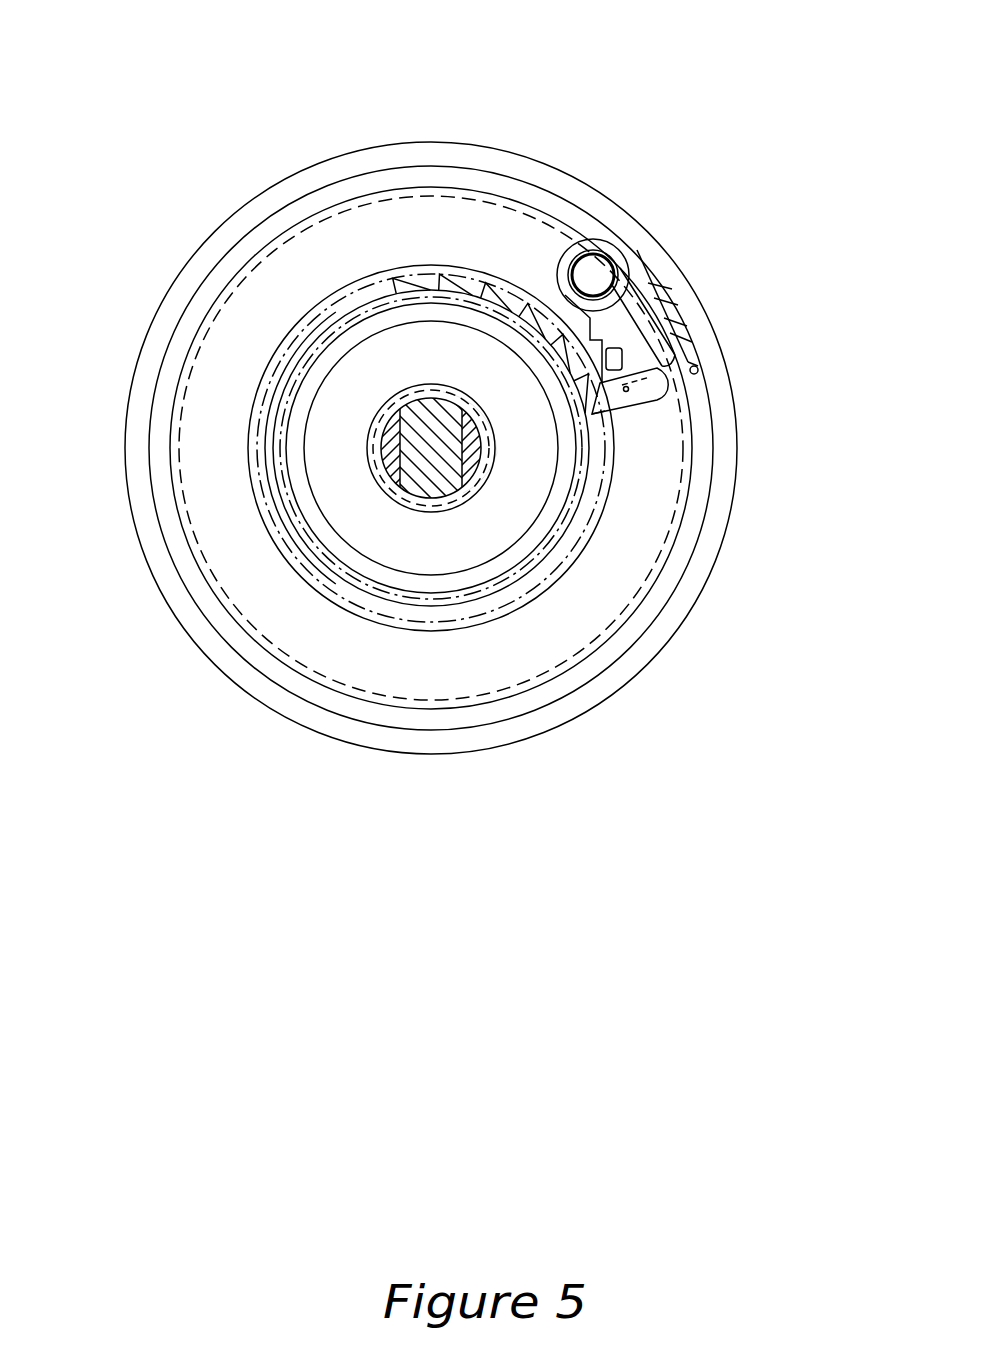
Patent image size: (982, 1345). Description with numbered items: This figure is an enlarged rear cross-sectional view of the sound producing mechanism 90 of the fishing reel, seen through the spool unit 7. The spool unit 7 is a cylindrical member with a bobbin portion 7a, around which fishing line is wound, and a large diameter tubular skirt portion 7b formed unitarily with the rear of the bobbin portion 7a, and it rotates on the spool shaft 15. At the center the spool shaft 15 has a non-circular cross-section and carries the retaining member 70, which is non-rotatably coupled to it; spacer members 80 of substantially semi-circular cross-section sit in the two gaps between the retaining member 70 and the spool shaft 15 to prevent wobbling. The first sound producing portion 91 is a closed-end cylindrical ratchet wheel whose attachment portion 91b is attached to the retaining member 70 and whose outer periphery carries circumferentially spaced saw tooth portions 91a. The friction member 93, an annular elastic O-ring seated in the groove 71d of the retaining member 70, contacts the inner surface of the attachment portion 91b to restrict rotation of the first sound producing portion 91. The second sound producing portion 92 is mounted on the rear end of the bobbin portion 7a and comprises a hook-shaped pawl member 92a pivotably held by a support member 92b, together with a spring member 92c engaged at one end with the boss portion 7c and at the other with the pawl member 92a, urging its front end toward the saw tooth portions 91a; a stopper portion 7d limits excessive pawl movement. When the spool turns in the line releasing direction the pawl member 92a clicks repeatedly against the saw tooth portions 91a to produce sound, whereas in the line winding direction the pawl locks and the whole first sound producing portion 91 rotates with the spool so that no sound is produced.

The spool unit 7 is at (564, 113).
The bobbin portion 7a is at (413, 195).
The skirt portion 7b is at (452, 157).
The boss portion 7c is at (690, 340).
The stopper portion 7d is at (698, 369).
The spool shaft 15 is at (400, 440).
The retaining member 70 is at (370, 458).
The groove 71d is at (383, 492).
The spacer members 80 is at (443, 392).
The sound producing mechanism 90 is at (545, 262).
The first sound producing portion 91 is at (348, 293).
The saw tooth portions 91a is at (390, 280).
The attachment portion 91b is at (347, 375).
The second sound producing portion 92 is at (653, 397).
The pawl member 92a is at (607, 413).
The support member 92b is at (598, 262).
The spring member 92c is at (672, 330).
The friction member 93 is at (490, 487).